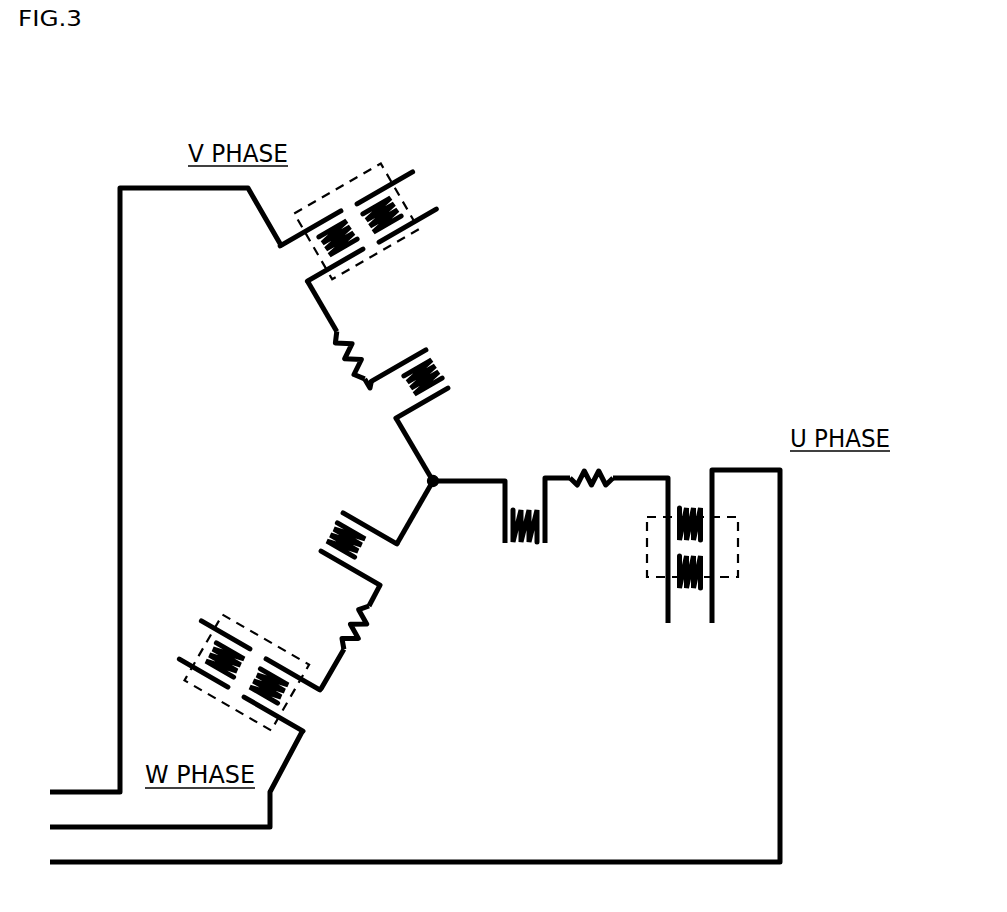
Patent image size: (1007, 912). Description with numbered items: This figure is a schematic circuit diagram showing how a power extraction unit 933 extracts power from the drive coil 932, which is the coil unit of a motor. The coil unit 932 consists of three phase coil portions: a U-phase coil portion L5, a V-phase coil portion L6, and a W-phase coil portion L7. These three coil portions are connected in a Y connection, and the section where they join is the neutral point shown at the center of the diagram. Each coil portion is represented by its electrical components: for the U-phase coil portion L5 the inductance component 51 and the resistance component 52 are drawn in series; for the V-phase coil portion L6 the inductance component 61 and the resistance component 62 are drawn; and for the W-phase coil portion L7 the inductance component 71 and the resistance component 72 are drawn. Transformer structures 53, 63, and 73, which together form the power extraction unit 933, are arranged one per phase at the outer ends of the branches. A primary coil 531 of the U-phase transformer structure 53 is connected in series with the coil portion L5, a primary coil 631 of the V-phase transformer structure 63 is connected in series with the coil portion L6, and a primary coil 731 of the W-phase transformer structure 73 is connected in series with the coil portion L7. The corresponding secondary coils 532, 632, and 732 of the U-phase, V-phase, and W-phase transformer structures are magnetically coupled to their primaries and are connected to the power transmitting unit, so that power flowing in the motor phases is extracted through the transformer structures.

The drive coil 932 is at (580, 377).
The power extraction unit 933 is at (853, 172).
The U-phase transformer structure 53 is at (786, 547).
The primary coil 531 is at (712, 510).
The secondary coil 532 is at (712, 592).
The inductance component 51 is at (530, 548).
The resistance component 52 is at (582, 490).
The U-phase coil portion L5 is at (535, 649).
The V-phase transformer structure 63 is at (358, 152).
The primary coil 631 is at (330, 213).
The secondary coil 632 is at (384, 195).
The inductance component 61 is at (447, 382).
The resistance component 62 is at (345, 337).
The V-phase coil portion L6 is at (462, 296).
The W-phase transformer structure 73 is at (249, 591).
The primary coil 731 is at (276, 660).
The secondary coil 732 is at (217, 630).
The inductance component 71 is at (360, 557).
The resistance component 72 is at (362, 617).
The W-phase coil portion L7 is at (445, 568).